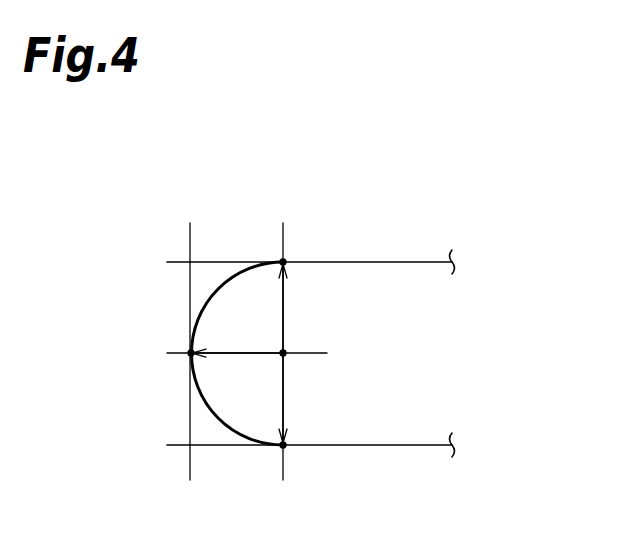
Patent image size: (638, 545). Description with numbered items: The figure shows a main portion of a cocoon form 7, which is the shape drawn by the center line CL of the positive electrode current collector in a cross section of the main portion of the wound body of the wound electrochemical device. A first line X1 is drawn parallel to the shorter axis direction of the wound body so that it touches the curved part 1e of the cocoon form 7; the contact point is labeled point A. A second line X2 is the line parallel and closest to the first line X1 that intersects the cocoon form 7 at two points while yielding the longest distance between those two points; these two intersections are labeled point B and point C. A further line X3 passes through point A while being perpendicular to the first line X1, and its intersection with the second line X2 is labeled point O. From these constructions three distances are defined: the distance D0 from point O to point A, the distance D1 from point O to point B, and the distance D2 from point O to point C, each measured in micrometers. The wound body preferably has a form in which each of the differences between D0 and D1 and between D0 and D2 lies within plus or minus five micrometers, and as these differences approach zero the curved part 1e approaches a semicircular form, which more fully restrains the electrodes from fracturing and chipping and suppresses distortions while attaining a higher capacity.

The cocoon form 7 is at (357, 309).
The curved part 1e is at (213, 298).
The center line CL is at (405, 262).
The first line X1 is at (194, 334).
The second line X2 is at (287, 334).
The line passing the point A X3 is at (230, 351).
The distance OA D0 is at (237, 367).
The distance OB D1 is at (300, 307).
The distance OC D2 is at (301, 399).
The point A is at (190, 355).
The point B is at (285, 260).
The point C is at (284, 447).
The point O is at (285, 356).